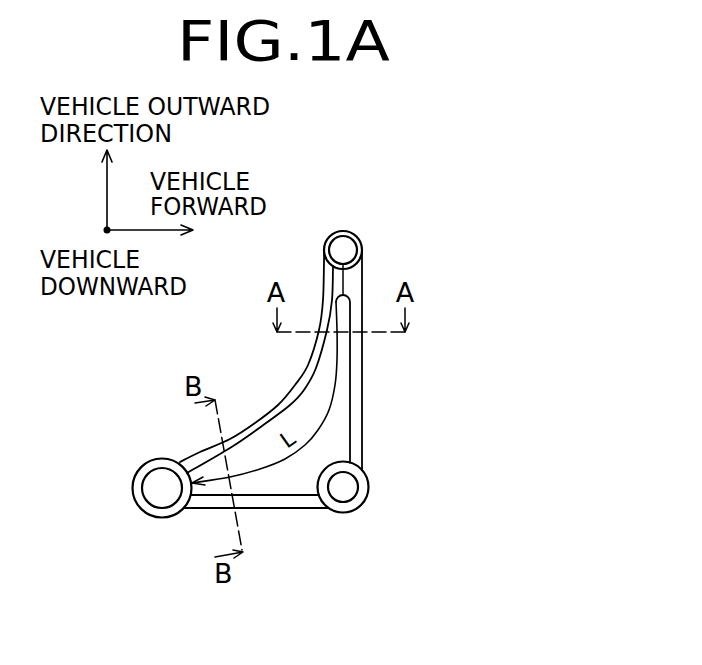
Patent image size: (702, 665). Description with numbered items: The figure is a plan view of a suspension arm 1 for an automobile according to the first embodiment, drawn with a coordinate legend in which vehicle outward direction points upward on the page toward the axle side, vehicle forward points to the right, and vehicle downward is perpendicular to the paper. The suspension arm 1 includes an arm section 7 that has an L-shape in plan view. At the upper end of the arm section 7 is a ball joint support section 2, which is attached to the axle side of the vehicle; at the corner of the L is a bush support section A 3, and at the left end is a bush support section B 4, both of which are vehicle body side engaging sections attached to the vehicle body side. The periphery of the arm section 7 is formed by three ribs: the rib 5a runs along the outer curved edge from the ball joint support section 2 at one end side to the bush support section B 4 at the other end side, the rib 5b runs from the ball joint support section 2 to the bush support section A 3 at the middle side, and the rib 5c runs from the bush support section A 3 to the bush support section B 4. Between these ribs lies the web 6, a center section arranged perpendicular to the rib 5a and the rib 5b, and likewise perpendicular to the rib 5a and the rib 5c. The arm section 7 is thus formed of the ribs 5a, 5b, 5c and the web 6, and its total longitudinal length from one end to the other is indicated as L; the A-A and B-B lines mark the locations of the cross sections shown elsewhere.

The suspension arm for an automobile 1 is at (368, 284).
The ball joint support section 2 is at (343, 231).
The bush support section A 3 is at (368, 487).
The bush support section B 4 is at (133, 488).
The rib 5a is at (284, 399).
The rib 5b is at (362, 392).
The rib 5c is at (272, 497).
The web 6 is at (297, 478).
The arm section 7 is at (388, 409).